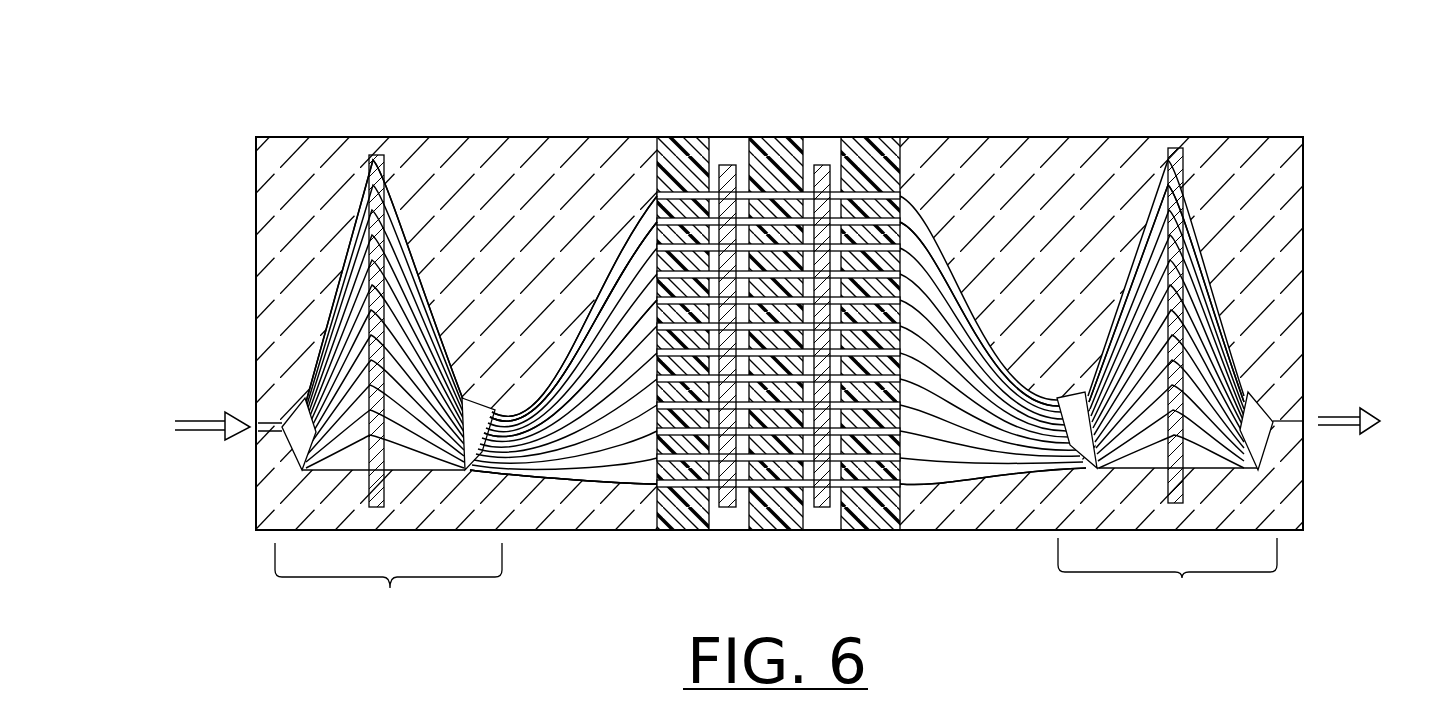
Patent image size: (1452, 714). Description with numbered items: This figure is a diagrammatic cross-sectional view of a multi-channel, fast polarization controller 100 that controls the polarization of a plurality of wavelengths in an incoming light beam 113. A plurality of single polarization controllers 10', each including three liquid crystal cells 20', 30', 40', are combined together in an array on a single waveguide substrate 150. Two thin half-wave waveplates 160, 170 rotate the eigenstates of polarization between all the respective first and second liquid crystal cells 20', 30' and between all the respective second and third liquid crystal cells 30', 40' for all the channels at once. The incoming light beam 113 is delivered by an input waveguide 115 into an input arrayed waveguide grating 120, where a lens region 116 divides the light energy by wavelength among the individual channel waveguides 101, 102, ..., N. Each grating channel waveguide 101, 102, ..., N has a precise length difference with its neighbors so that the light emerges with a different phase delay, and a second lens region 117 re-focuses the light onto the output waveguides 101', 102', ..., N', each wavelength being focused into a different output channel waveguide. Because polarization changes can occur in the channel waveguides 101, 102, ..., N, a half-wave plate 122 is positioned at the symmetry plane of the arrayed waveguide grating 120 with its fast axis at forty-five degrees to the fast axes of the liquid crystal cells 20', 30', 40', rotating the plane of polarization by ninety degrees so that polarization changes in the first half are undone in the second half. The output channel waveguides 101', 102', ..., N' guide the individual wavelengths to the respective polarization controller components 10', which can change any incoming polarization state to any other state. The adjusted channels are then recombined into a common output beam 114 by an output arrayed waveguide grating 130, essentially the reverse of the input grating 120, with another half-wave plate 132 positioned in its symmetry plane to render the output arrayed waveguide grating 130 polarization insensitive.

The multi-channel fast polarization controller 100 is at (418, 97).
The waveguide substrate 150 is at (285, 135).
The channel waveguide 101 is at (385, 282).
The ½-wave plate 122 is at (389, 148).
The channel waveguide 102 is at (318, 281).
The second lens region 117 is at (480, 386).
The incoming light beam 113 is at (200, 420).
The input waveguide 115 is at (264, 434).
The lens region 116 is at (304, 470).
The channel waveguide N is at (315, 517).
The output channel waveguide 102' is at (553, 340).
The output channel waveguide 101' is at (559, 368).
The output channel waveguide N' is at (563, 522).
The single polarization controller 10' is at (605, 248).
The first liquid crystal cell 20' is at (735, 304).
The second liquid crystal cell 30' is at (827, 305).
The third liquid crystal cell 40' is at (938, 305).
The λ/2 waveplate 160 is at (727, 507).
The λ/2 waveplate 170 is at (822, 507).
The ½-wave plate 132 is at (1162, 148).
The common output beam 114 is at (1338, 412).
The arrayed waveguide grating 120 is at (388, 585).
The output arrayed waveguide grating 130 is at (1167, 578).